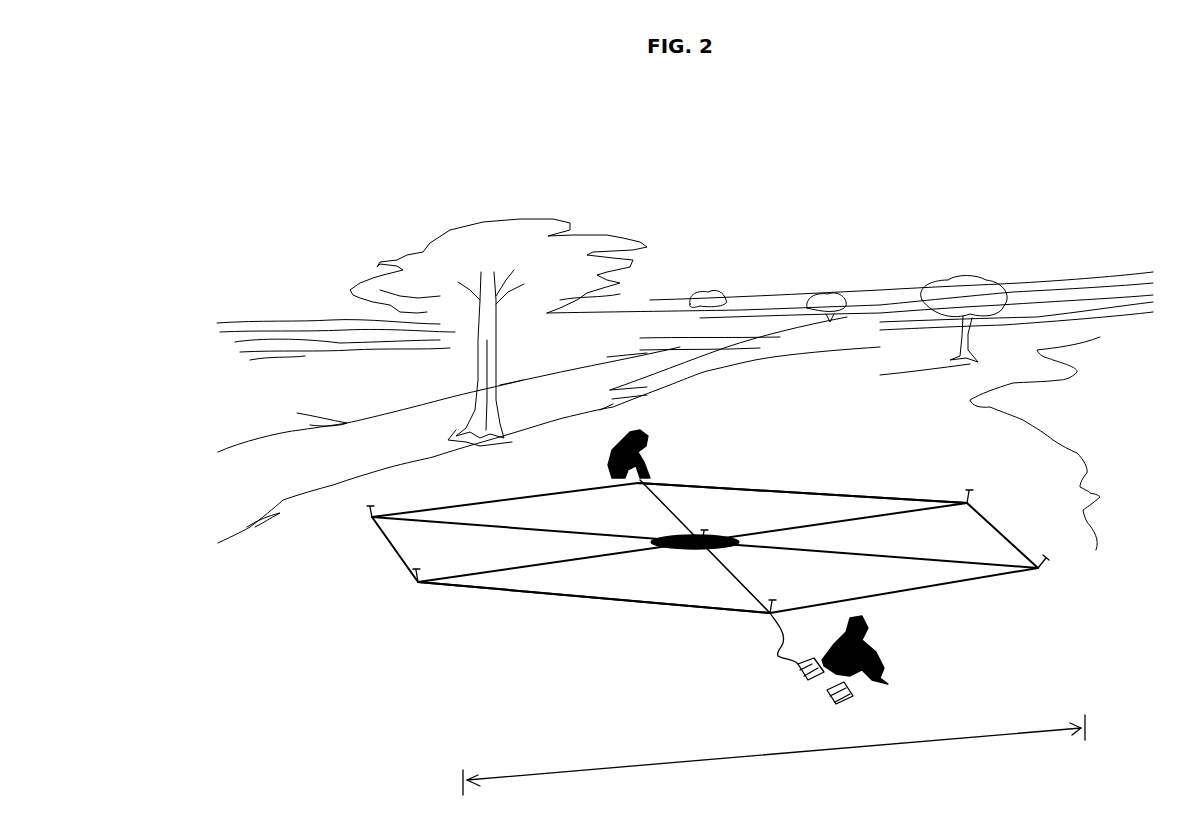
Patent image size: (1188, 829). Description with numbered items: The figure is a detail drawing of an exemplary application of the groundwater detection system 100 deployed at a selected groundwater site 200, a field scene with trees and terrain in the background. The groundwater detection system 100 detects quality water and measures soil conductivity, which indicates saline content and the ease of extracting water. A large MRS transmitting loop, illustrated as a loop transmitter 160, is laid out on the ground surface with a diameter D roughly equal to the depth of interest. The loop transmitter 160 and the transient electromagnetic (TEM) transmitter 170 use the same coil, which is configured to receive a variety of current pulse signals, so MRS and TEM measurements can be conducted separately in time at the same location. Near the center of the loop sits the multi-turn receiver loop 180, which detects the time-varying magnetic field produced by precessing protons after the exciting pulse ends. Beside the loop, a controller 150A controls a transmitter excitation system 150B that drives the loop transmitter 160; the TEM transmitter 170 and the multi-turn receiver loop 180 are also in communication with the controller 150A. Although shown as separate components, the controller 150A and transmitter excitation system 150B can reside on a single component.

The groundwater site 200 is at (347, 168).
The groundwater detection system 100 is at (420, 634).
The loop transmitter 160 is at (752, 486).
The transient electromagnetic (TEM) transmitter 170 is at (538, 598).
The multi-turn receiver loop 180 is at (665, 535).
The controller 150A is at (817, 698).
The transmitter excitation system 150B is at (788, 673).